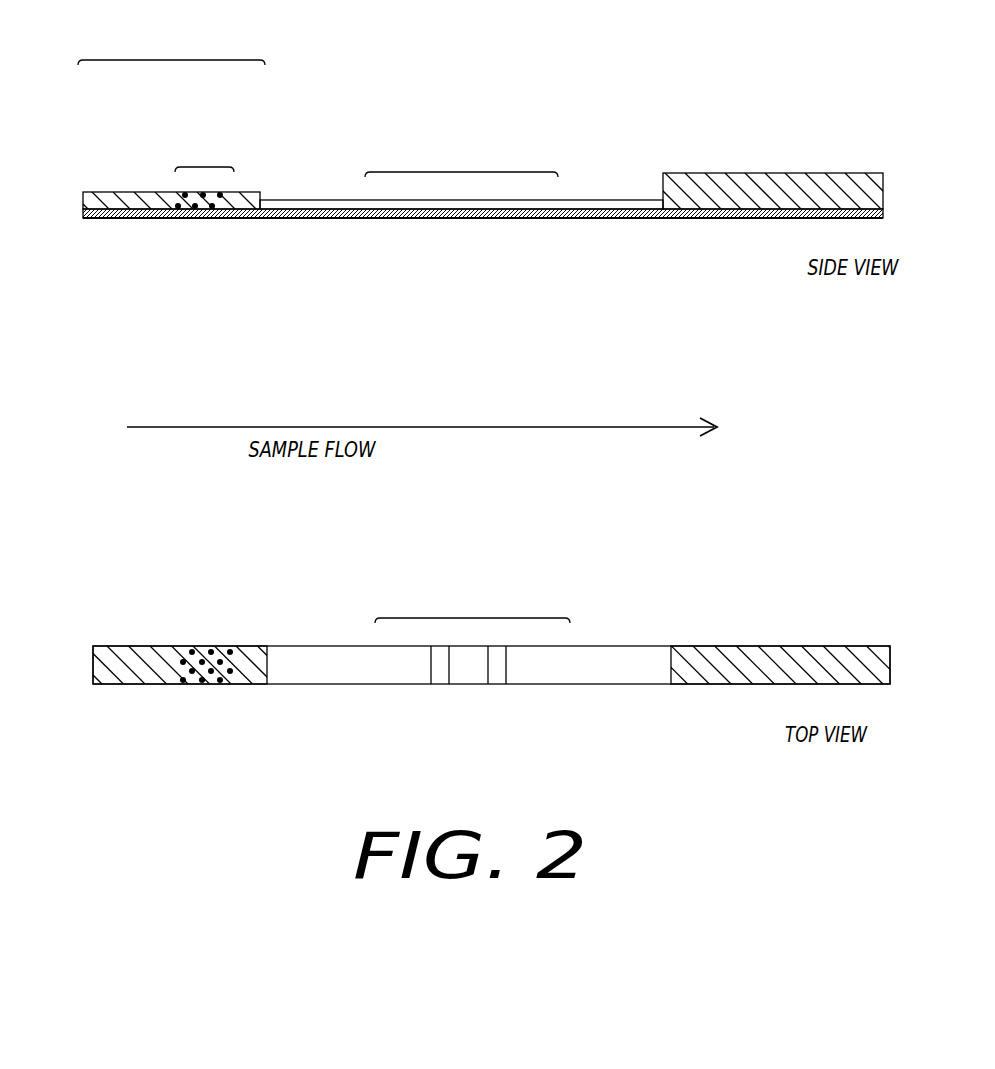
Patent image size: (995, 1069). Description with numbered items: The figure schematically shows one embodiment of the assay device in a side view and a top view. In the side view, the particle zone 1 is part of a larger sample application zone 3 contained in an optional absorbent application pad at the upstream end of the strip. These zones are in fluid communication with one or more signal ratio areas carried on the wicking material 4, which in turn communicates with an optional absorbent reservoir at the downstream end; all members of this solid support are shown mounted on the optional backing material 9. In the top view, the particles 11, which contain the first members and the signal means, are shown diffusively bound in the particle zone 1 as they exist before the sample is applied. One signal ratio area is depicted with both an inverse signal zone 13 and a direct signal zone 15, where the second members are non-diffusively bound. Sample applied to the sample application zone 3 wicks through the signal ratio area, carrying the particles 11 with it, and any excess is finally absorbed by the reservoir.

The particle zone 1 is at (204, 175).
The sample application zone 3 is at (171, 48).
The wicking material 4 is at (285, 200).
The backing material 9 is at (105, 215).
The particles 11 is at (188, 680).
The inverse signal zone 13 is at (440, 675).
The direct signal zone 15 is at (498, 675).